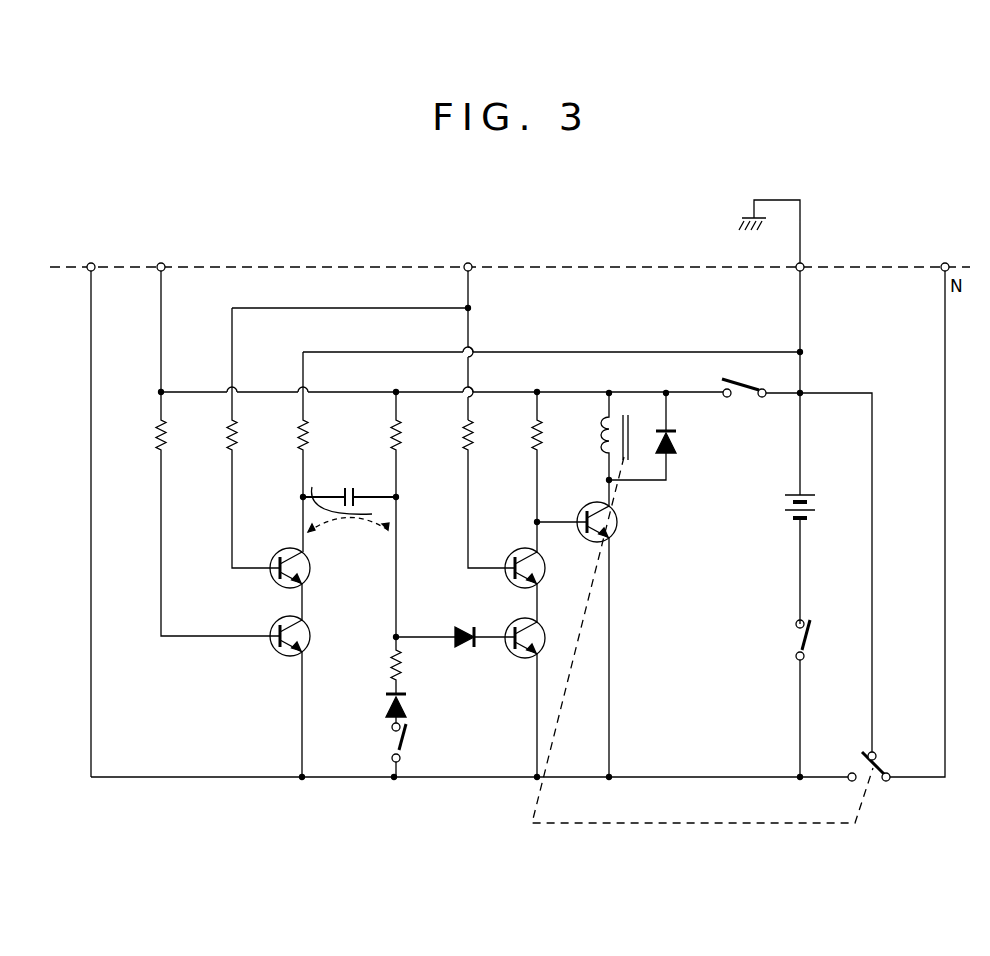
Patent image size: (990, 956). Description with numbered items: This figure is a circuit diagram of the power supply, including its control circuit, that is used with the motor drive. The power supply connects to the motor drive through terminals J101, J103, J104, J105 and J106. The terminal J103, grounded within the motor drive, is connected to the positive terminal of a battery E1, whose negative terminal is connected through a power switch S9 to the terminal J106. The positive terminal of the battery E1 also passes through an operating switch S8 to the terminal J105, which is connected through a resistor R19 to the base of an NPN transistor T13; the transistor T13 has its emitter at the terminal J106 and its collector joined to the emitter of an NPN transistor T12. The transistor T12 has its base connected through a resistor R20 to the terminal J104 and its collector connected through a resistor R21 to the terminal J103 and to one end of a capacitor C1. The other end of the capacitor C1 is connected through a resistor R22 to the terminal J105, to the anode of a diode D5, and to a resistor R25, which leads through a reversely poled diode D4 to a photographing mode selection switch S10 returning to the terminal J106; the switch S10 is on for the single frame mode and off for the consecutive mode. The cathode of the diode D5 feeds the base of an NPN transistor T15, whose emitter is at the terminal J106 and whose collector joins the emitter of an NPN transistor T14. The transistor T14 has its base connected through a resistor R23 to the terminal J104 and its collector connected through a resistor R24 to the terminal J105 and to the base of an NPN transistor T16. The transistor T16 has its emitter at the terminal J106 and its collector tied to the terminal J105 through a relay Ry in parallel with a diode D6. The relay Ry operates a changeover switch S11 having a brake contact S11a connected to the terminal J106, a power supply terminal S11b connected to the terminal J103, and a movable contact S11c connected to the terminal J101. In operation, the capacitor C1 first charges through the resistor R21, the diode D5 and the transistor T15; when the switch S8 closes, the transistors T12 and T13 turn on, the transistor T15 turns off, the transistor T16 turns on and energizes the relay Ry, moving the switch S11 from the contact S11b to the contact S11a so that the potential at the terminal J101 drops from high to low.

The terminal J106 is at (92, 263).
The terminal J105 is at (163, 263).
The terminal J104 is at (470, 263).
The terminal J103 is at (804, 264).
The terminal J101 is at (947, 263).
The resistor R19 is at (157, 437).
The resistor R20 is at (229, 437).
The resistor R21 is at (300, 437).
The resistor R22 is at (393, 437).
The resistor R23 is at (463, 437).
The resistor R24 is at (532, 437).
The resistor R25 is at (392, 661).
The capacitor C1 is at (348, 489).
The NPN transistor T12 is at (312, 574).
The NPN transistor T13 is at (278, 655).
The NPN transistor T14 is at (546, 563).
The NPN transistor T15 is at (517, 656).
The NPN transistor T16 is at (618, 538).
The reversely poled diode D4 is at (405, 706).
The diode D5 is at (460, 628).
The diode D6 is at (676, 441).
The relay Ry is at (602, 436).
The operating switch S8 is at (745, 403).
The power switch S9 is at (790, 640).
The photographing mode selection switch S10 is at (404, 741).
The changeover switch S11 is at (863, 765).
The brake contact S11a is at (850, 783).
The power supply terminal S11b is at (875, 753).
The movable contact S11c is at (906, 767).
The battery E1 is at (784, 502).